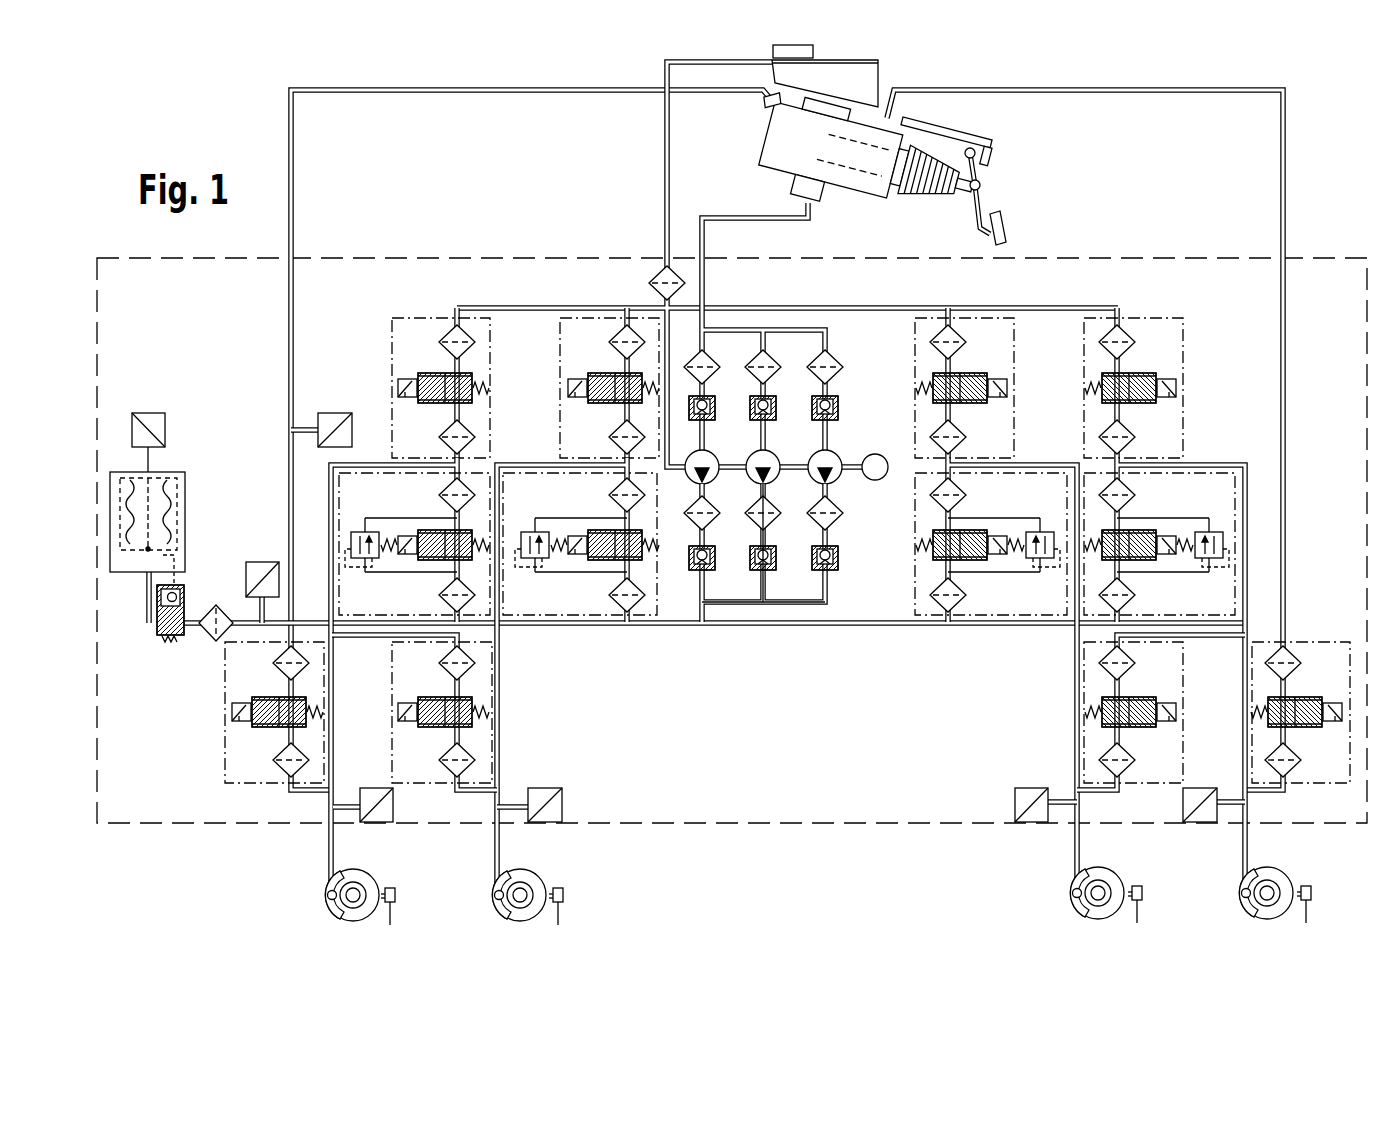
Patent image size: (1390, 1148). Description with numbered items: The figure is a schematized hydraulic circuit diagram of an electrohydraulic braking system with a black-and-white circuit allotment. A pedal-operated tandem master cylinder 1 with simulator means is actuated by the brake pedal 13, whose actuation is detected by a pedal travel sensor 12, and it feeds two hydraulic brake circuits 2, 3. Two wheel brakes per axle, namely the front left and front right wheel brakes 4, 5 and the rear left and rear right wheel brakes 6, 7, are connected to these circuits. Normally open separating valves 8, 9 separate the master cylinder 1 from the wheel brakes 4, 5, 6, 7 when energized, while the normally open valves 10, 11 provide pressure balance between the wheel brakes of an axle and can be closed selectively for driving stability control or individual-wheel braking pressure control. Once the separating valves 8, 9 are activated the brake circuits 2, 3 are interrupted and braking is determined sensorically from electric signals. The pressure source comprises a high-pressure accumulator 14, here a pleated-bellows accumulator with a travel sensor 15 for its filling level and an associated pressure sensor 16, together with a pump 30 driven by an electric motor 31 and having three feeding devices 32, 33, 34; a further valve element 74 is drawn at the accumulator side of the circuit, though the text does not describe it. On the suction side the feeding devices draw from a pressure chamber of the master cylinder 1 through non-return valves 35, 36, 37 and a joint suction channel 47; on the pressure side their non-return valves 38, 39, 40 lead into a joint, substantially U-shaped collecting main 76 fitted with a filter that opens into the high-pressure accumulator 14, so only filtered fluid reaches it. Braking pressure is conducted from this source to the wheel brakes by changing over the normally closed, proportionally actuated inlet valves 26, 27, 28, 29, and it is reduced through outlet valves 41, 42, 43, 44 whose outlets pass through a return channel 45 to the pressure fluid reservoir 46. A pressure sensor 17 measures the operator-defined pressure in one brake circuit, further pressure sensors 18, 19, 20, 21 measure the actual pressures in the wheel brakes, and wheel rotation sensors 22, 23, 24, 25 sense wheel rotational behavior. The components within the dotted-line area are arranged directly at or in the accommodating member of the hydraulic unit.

The tandem master cylinder 1 is at (901, 135).
The hydraulic brake circuit 2 is at (288, 118).
The hydraulic brake circuit 3 is at (1287, 137).
The wheel brake 4 is at (365, 880).
The wheel brake 5 is at (533, 880).
The wheel brake 6 is at (1110, 878).
The wheel brake 7 is at (1280, 878).
The separating valve 8 is at (228, 753).
The separating valve 9 is at (1315, 650).
The hydraulic valve 10 is at (478, 735).
The hydraulic valve 11 is at (1098, 737).
The pedal travel sensor 12 is at (949, 137).
The brake pedal 13 is at (1009, 219).
The high-pressure accumulator 14 is at (186, 485).
The travel sensor 15 is at (148, 412).
The pressure sensor 16 is at (262, 561).
The pressure sensor 17 is at (335, 412).
The pressure sensor 18 is at (377, 787).
The pressure sensor 19 is at (563, 805).
The pressure sensor 20 is at (1014, 805).
The pressure sensor 21 is at (1198, 787).
The wheel rotation sensor 22 is at (397, 894).
The wheel rotation sensor 23 is at (565, 894).
The wheel rotation sensor 24 is at (1144, 892).
The wheel rotation sensor 25 is at (1313, 892).
The inlet valve 26 is at (376, 482).
The inlet valve 27 is at (540, 482).
The inlet valve 28 is at (1036, 482).
The inlet valve 29 is at (1198, 482).
The pump 30 is at (808, 592).
The electric motor 31 is at (882, 454).
The feeding device 32 is at (717, 481).
The feeding device 33 is at (778, 481).
The feeding device 34 is at (840, 481).
The non-return valve 35 is at (715, 406).
The non-return valve 36 is at (777, 406).
The non-return valve 37 is at (839, 406).
The non-return valve 38 is at (713, 567).
The non-return valve 39 is at (775, 567).
The non-return valve 40 is at (838, 567).
The outlet valve 41 is at (431, 327).
The outlet valve 42 is at (598, 326).
The outlet valve 43 is at (977, 326).
The outlet valve 44 is at (1144, 325).
The return channel 45 is at (664, 172).
The pressure fluid reservoir 46 is at (870, 86).
The joint suction channel 47 is at (719, 217).
The simulator valve 74 is at (160, 642).
The collecting main 76 is at (747, 605).